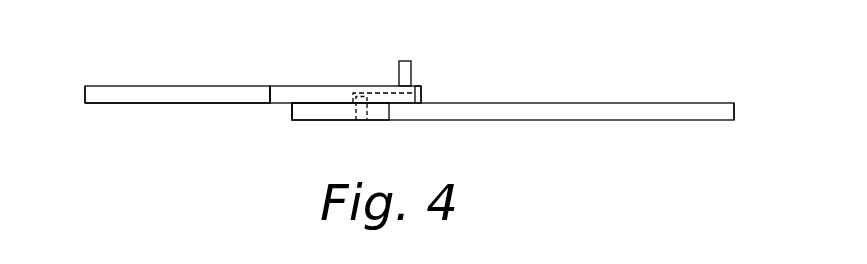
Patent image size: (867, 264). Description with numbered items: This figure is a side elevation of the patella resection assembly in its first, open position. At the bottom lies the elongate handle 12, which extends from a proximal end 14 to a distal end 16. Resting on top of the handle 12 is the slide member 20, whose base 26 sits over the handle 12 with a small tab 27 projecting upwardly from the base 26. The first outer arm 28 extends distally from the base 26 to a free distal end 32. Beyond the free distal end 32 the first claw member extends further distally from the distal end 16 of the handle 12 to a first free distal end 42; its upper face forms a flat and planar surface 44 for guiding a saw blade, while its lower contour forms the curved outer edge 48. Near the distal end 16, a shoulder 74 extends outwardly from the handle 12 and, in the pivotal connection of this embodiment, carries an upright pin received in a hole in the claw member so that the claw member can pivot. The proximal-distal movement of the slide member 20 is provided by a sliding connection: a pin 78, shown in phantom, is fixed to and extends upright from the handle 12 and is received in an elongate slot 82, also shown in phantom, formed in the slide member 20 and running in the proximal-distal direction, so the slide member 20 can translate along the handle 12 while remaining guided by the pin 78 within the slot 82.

The handle 12 is at (562, 110).
The proximal end 14 is at (736, 112).
The distal end 16 is at (292, 113).
The slide member 20 is at (417, 87).
The base 26 is at (422, 99).
The tab 27 is at (405, 61).
The first outer arm 28 is at (317, 88).
The free distal end 32 is at (269, 97).
The first free distal end 42 is at (85, 95).
The flat and planar surface 44 is at (198, 85).
The curved outer edge 48 is at (150, 104).
The shoulder 74 is at (310, 121).
The pin 78 is at (363, 121).
The slot 82 is at (376, 93).